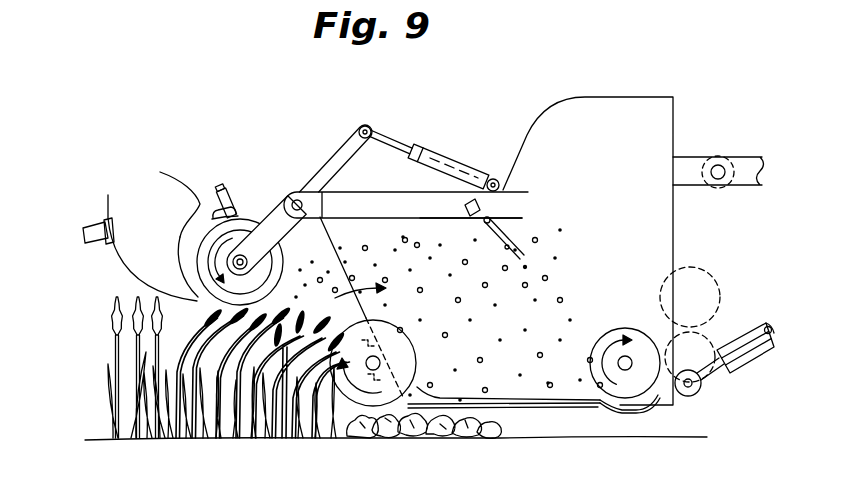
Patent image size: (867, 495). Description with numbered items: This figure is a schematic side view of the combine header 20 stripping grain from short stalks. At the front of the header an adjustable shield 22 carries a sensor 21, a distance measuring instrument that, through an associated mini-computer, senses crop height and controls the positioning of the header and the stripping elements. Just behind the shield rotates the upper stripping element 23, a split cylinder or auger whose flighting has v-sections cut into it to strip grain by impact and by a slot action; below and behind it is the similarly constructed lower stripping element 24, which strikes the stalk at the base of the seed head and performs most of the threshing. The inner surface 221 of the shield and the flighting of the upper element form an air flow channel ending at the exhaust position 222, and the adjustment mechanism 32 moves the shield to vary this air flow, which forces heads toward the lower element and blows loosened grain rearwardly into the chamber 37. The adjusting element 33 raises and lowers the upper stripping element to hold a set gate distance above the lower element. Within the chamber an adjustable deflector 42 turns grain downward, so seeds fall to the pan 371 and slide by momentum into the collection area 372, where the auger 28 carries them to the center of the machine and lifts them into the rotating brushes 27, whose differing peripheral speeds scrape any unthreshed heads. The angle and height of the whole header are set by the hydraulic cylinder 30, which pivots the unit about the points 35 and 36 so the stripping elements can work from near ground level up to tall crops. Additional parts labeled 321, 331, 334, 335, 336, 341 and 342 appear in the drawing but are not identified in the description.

The combine header 20 is at (606, 80).
The sensor 21 is at (93, 221).
The adjustable shield 22 is at (127, 268).
The upper stripping element 23 is at (286, 262).
The lower stripping element 24 is at (419, 363).
The rotating brushes 27 is at (723, 292).
The auger 28 is at (633, 326).
The hydraulic cylinder 30 is at (745, 368).
The adjustment mechanism 32 is at (234, 207).
The adjusting element 33 is at (478, 134).
The pivot point 35 is at (695, 395).
The pivot point 36 is at (720, 163).
The chamber 37 is at (487, 294).
The adjustable deflector 42 is at (516, 245).
The inner surface 221 is at (162, 197).
The exhaust position 222 is at (182, 294).
The nozzle mount 321 is at (211, 209).
The pivot 331 is at (293, 200).
The reel shaft 334 is at (238, 260).
The pivot arm 335 is at (342, 140).
The piston rod pivot 336 is at (393, 146).
The support bar 341 is at (320, 202).
The bar lower edge 342 is at (425, 227).
The pan 371 is at (520, 403).
The collection area 372 is at (631, 413).